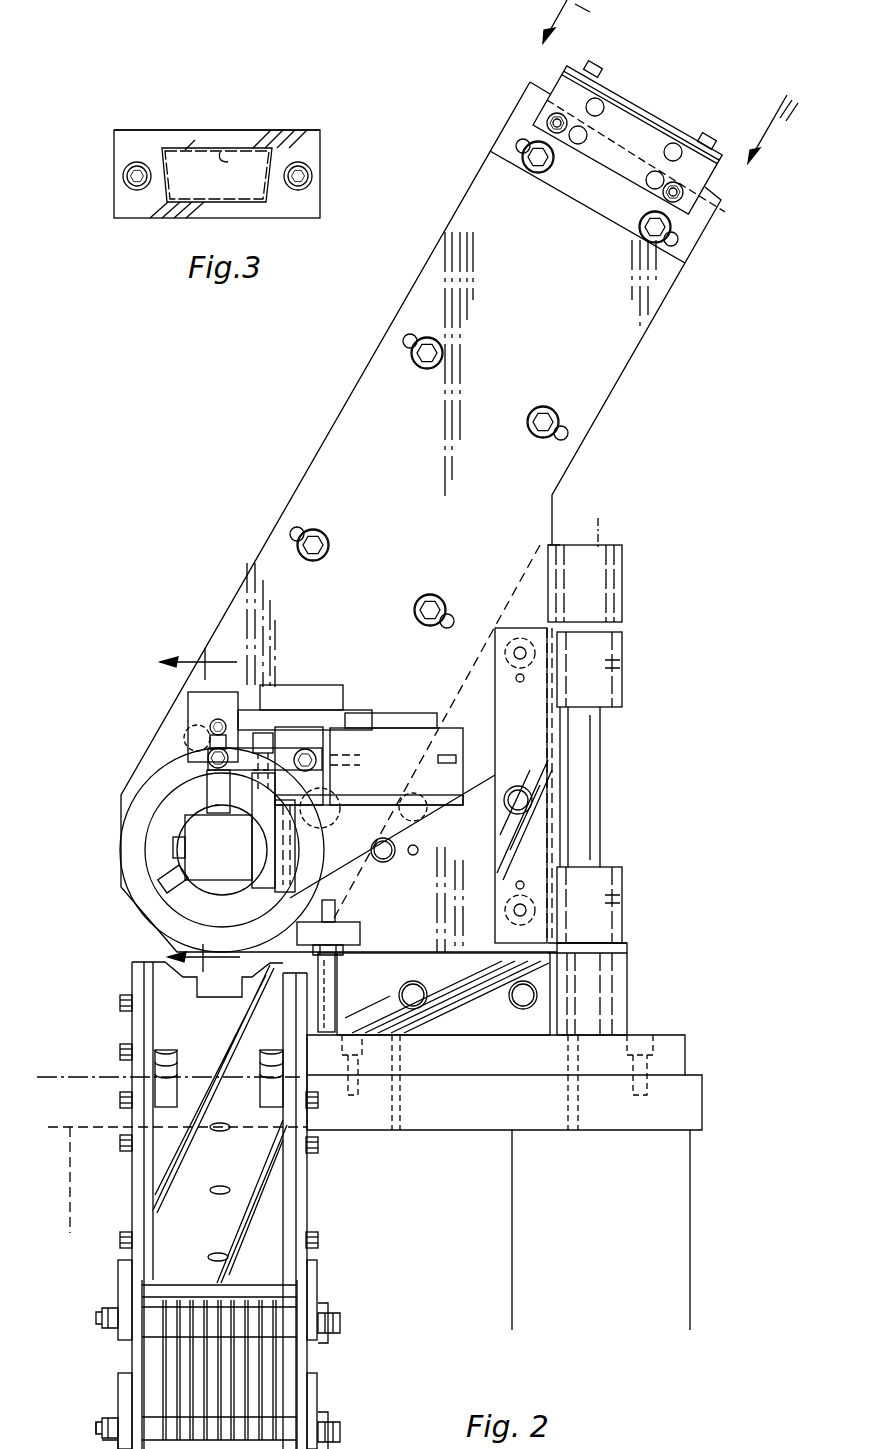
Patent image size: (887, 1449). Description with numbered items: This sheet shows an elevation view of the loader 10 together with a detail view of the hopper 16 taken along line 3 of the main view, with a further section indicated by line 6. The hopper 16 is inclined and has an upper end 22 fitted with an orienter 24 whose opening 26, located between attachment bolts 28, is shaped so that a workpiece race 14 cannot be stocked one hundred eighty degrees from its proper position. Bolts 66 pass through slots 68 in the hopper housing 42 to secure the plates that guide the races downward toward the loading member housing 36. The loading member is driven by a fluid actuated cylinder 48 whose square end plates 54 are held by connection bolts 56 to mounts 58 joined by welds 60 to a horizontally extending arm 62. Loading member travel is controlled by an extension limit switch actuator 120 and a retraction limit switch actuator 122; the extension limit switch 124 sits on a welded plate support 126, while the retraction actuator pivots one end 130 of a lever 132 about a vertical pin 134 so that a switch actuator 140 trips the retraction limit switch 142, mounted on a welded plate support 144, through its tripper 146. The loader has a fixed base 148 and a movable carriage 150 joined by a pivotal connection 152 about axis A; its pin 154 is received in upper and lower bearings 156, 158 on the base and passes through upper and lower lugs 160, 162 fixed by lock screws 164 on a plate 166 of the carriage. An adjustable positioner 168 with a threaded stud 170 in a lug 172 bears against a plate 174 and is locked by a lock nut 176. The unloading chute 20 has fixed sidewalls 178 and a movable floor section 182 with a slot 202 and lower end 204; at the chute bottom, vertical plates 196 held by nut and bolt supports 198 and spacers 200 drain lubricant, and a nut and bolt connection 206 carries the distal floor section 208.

In FIG. 2, the line 3— 3 is at (674, 81).
In FIG. 2, the line 6— 6 is at (200, 810).
In FIG. 2, the loader 10 is at (92, 781).
In FIG. 3, the workpiece race 14 is at (190, 146).
In FIG. 2, the hopper 16 is at (618, 390).
In FIG. 2, the unloading chute 20 is at (318, 1283).
In FIG. 3, the upper end of hopper 22 is at (322, 158).
In FIG. 2, the upper end of hopper 22 is at (704, 192).
In FIG. 3, the orienter 24 is at (116, 188).
In FIG. 2, the orienter 24 is at (652, 105).
In FIG. 3, the opening 26 is at (226, 158).
In FIG. 3, the attachment bolts 28 is at (138, 170).
In FIG. 2, the attachment bolts 28 is at (592, 66).
In FIG. 2, the loading member housing 36 is at (152, 864).
In FIG. 2, the hopper housing 42 is at (556, 506).
In FIG. 2, the fluid actuated cylinder 48 is at (172, 893).
In FIG. 2, the square end plates 54 is at (195, 800).
In FIG. 2, the connection bolts 56 is at (172, 845).
In FIG. 2, the mounts 58 is at (258, 850).
In FIG. 2, the welds 60 is at (290, 900).
In FIG. 2, the arm 62 is at (300, 895).
In FIG. 2, the bolts 66 is at (652, 215).
In FIG. 2, the slots 68 is at (550, 165).
In FIG. 2, the axis A is at (600, 535).
In FIG. 2, the extension limit switch actuator 120 is at (180, 712).
In FIG. 2, the retraction limit switch actuator 122 is at (212, 757).
In FIG. 2, the extension limit switch 124 is at (195, 703).
In FIG. 2, the welded plate support 126 is at (410, 722).
In FIG. 2, the lever end 130 is at (195, 745).
In FIG. 2, the lever 132 is at (290, 712).
In FIG. 2, the vertical pin 134 is at (265, 738).
In FIG. 2, the switch actuator 140 is at (315, 755).
In FIG. 2, the retraction limit switch 142 is at (330, 735).
In FIG. 2, the welded plate support 144 is at (380, 862).
In FIG. 2, the tripper 146 is at (305, 740).
In FIG. 2, the fixed base 148 is at (735, 1022).
In FIG. 2, the movable carriage 150 is at (470, 1025).
In FIG. 2, the pivotal connection 152 is at (630, 670).
In FIG. 2, the pin 154 is at (592, 790).
In FIG. 2, the upper bearing 156 is at (620, 575).
In FIG. 2, the lower bearing 158 is at (628, 970).
In FIG. 2, the upper lug 160 is at (620, 700).
In FIG. 2, the lower lug 162 is at (622, 875).
In FIG. 2, the lock screws 164 is at (625, 645).
In FIG. 2, the plate 166 is at (503, 880).
In FIG. 2, the adjustable positioner 168 is at (340, 984).
In FIG. 2, the threaded stud 170 is at (345, 950).
In FIG. 2, the lug 172 is at (331, 903).
In FIG. 2, the plate 174 is at (435, 1065).
In FIG. 2, the lock nut 176 is at (348, 930).
In FIG. 2, the fixed sidewalls 178 is at (150, 1160).
In FIG. 2, the movable floor section 182 is at (150, 1027).
In FIG. 2, the plates 196 is at (168, 1350).
In FIG. 2, the nut and bolt supports 198 is at (105, 1306).
In FIG. 2, the spacers 200 is at (188, 1300).
In FIG. 2, the slot 202 is at (210, 990).
In FIG. 2, the lower end 204 is at (198, 1285).
In FIG. 2, the nut and bolt connection 206 is at (100, 1445).
In FIG. 2, the distal floor section 208 is at (103, 1448).